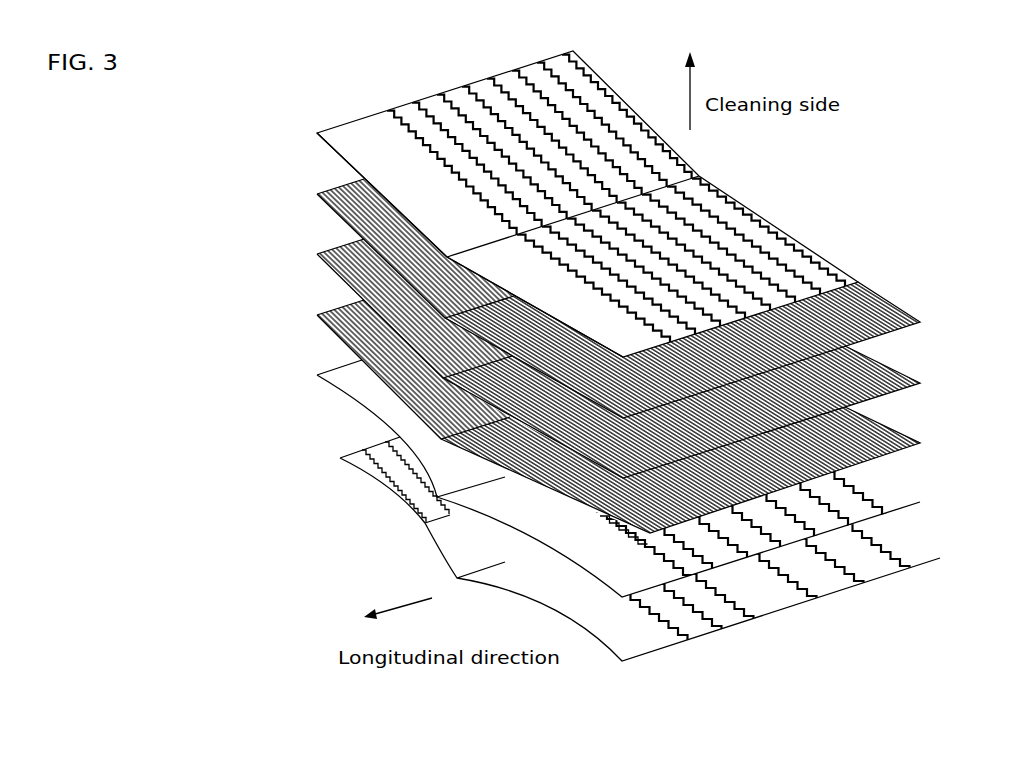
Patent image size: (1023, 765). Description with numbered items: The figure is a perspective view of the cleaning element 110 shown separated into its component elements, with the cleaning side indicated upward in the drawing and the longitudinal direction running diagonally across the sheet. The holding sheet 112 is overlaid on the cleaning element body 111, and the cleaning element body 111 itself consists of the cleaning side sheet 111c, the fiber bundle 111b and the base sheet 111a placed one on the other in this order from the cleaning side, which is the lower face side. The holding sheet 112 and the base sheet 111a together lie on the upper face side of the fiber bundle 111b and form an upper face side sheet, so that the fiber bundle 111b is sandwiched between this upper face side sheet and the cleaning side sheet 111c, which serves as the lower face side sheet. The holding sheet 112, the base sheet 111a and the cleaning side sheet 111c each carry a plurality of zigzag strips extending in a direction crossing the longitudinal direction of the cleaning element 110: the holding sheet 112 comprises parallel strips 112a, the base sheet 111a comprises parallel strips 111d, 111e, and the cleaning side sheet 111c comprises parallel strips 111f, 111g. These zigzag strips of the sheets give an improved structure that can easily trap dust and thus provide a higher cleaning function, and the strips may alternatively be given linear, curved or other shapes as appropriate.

The cleaning element 110 is at (836, 203).
The cleaning element body 111 is at (208, 130).
The base sheet 111a is at (336, 390).
The fiber bundle 111b is at (288, 187).
The cleaning side sheet 111c is at (329, 147).
The strips 111d is at (750, 547).
The strips 111e is at (643, 575).
The strips 111f is at (438, 100).
The strips 111g is at (344, 131).
The holding sheet 112 is at (379, 489).
The strips 112a is at (700, 632).